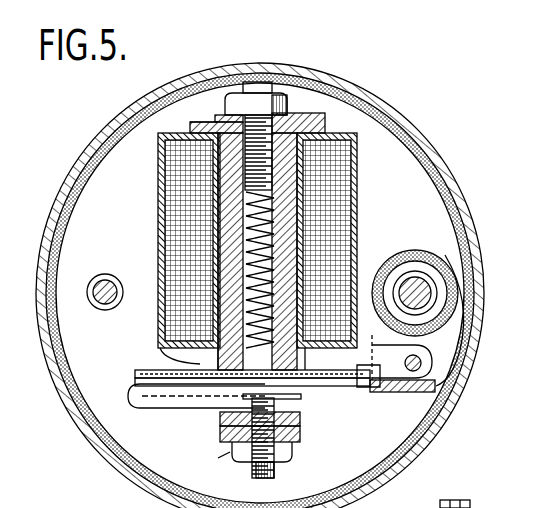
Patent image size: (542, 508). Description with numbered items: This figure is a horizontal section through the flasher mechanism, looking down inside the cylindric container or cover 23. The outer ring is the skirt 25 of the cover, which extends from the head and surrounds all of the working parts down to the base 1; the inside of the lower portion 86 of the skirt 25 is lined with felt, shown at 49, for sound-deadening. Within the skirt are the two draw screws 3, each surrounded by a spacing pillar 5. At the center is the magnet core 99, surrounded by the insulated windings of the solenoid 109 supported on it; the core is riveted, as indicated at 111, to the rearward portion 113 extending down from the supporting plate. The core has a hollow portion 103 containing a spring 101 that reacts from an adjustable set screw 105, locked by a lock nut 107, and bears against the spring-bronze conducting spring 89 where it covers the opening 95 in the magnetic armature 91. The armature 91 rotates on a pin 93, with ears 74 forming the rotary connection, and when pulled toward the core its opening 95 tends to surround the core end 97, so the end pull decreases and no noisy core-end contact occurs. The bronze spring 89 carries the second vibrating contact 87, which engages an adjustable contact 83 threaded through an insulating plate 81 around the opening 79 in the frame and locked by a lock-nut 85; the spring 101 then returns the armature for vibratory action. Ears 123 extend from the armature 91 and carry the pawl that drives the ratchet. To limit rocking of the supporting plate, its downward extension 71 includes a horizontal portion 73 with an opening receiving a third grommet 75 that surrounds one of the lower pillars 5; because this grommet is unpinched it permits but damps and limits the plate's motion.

The base 1 is at (380, 467).
The draw screws 3 is at (422, 282).
The spacing pillars 5 is at (432, 289).
The cylindric container or cover 23 is at (72, 160).
The skirt 25 is at (146, 478).
The felt lining 49 is at (463, 205).
The downward extension 71 is at (402, 393).
The horizontal portion 73 is at (440, 340).
The ears 74 is at (368, 388).
The third grommet 75 is at (450, 288).
The opening 79 is at (296, 424).
The insulating plate 81 is at (297, 438).
The adjustable contact 83 is at (270, 478).
The lock-nut 85 is at (238, 456).
The lower portion of skirt 86 is at (77, 426).
The second vibrating contact 87 is at (262, 399).
The spring-bronze conducting spring 89 is at (182, 409).
The magnetic armature 91 is at (150, 374).
The pin 93 is at (420, 370).
The opening 95 is at (192, 378).
The end of magnet core 97 is at (205, 362).
The magnet core 99 is at (218, 226).
The spring 101 is at (292, 226).
The hollow portion 103 is at (300, 234).
The adjustable set screw 105 is at (357, 167).
The lock nut 107 is at (288, 104).
The solenoid 109 is at (176, 246).
The rivet 111 is at (215, 118).
The rearward portion 113 is at (192, 127).
The ears 123 is at (462, 501).